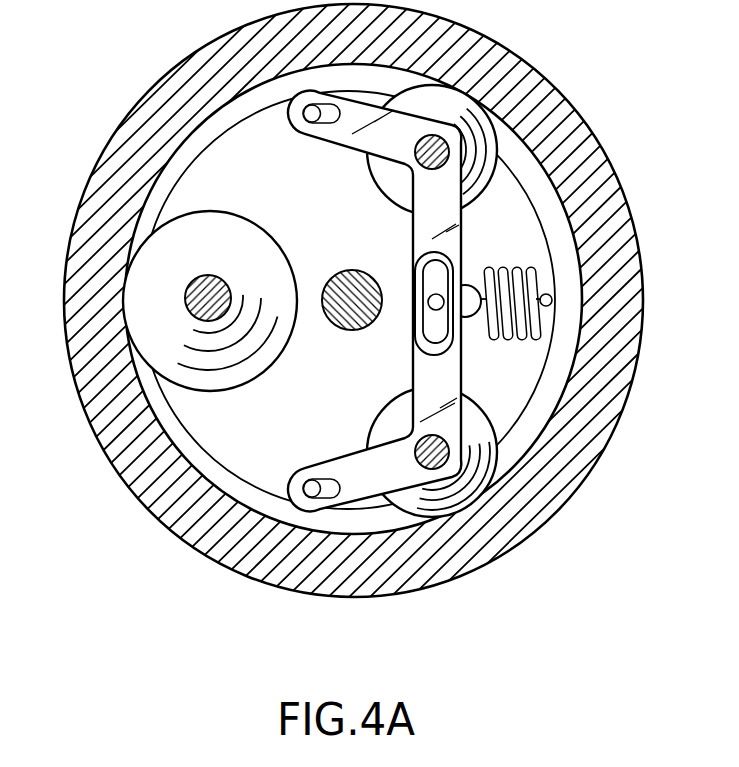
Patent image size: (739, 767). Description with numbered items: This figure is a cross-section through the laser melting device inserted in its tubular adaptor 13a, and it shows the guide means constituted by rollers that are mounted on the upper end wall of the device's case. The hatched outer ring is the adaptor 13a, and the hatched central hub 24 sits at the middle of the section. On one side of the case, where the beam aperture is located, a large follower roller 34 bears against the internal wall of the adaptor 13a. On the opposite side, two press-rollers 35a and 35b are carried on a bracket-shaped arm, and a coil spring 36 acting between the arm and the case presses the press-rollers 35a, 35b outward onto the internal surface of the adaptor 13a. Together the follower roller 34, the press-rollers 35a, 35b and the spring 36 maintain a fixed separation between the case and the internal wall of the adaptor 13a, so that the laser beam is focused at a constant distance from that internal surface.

The adaptor 13a is at (190, 93).
The hub 24 is at (331, 233).
The follower roller 34 is at (167, 331).
The press-roller 35a is at (477, 492).
The press-roller 35b is at (467, 112).
The spring 36 is at (533, 290).